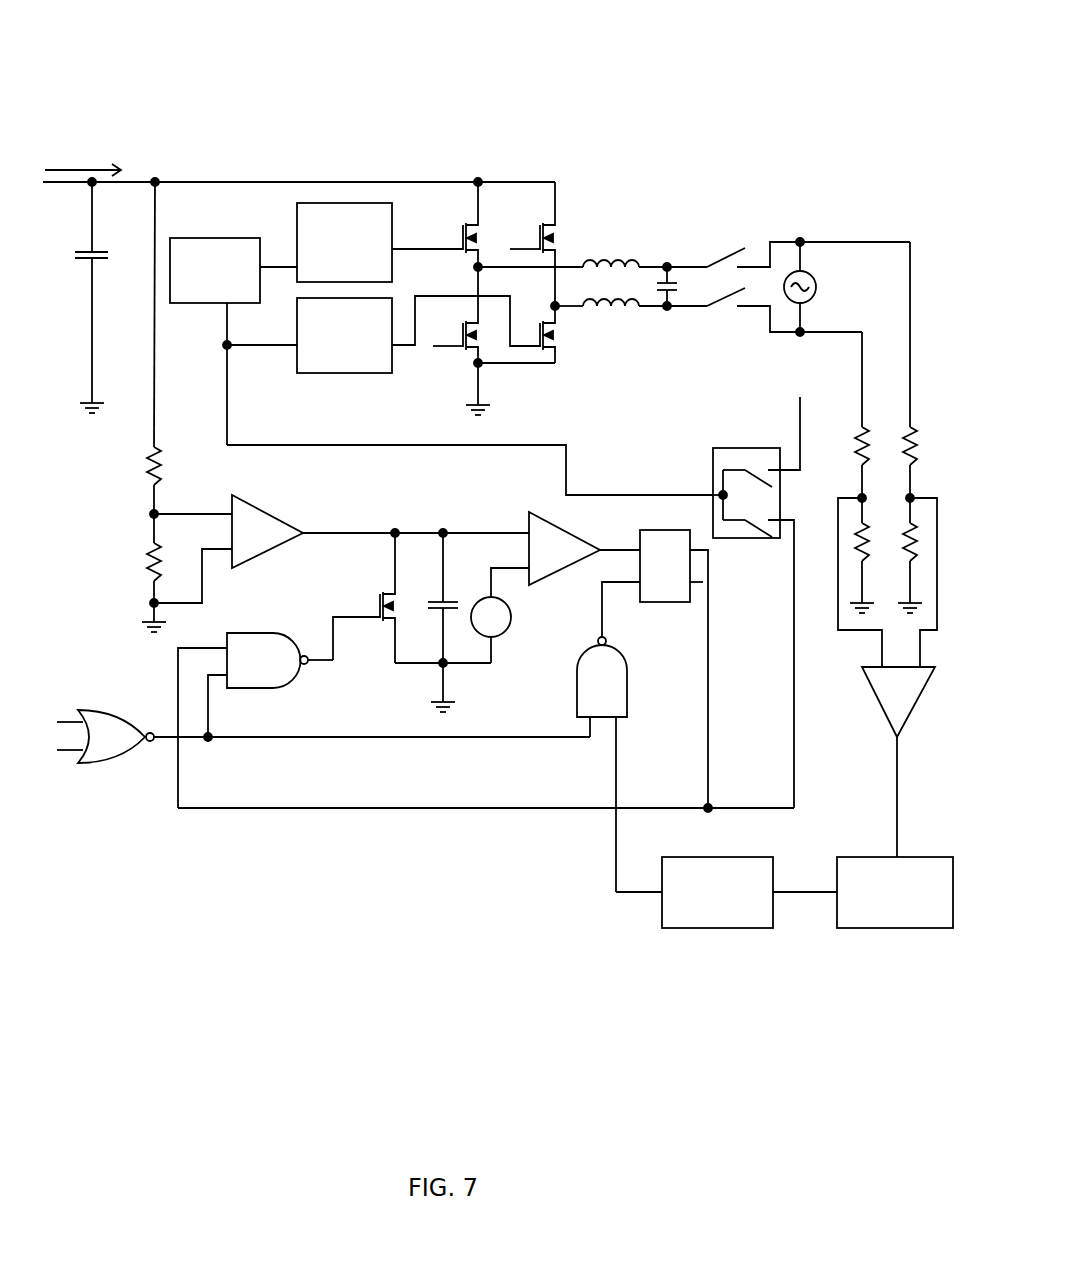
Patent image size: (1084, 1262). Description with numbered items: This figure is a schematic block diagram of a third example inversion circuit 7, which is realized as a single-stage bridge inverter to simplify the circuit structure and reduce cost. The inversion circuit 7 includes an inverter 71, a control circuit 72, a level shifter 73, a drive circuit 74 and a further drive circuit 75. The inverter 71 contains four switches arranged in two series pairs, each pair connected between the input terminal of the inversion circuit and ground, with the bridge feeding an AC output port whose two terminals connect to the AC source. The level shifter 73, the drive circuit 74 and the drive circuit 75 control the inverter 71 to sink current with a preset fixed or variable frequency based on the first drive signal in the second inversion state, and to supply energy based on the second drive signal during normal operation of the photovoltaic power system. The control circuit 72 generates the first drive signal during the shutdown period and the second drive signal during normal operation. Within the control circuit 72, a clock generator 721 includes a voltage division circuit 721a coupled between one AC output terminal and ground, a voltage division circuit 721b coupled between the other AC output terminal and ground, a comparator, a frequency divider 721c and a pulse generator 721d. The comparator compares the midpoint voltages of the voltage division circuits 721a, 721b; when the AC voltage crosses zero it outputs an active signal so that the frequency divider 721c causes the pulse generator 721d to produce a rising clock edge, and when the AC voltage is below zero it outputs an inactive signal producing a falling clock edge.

The inversion circuit 7 is at (452, 90).
The inverter 71 is at (507, 165).
The control circuit 72 is at (414, 852).
The level shifter 73 is at (200, 238).
The drive circuit 74 is at (392, 210).
The drive circuit 75 is at (340, 373).
The clock generator 721 is at (603, 845).
The voltage division circuit 721a is at (852, 487).
The voltage division circuit 721b is at (927, 475).
The frequency divider 721c is at (903, 930).
The pulse generator 721d is at (738, 930).